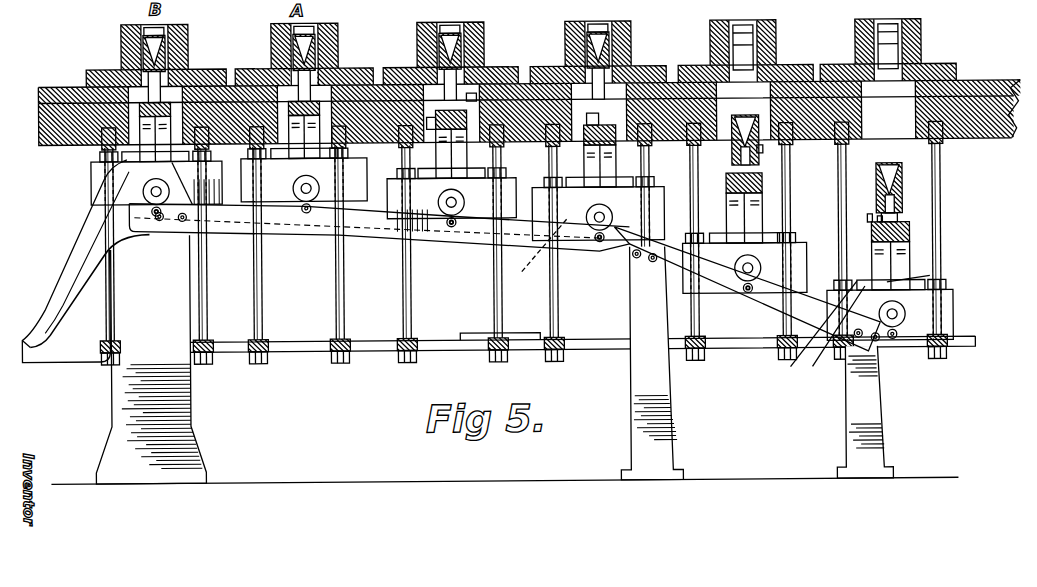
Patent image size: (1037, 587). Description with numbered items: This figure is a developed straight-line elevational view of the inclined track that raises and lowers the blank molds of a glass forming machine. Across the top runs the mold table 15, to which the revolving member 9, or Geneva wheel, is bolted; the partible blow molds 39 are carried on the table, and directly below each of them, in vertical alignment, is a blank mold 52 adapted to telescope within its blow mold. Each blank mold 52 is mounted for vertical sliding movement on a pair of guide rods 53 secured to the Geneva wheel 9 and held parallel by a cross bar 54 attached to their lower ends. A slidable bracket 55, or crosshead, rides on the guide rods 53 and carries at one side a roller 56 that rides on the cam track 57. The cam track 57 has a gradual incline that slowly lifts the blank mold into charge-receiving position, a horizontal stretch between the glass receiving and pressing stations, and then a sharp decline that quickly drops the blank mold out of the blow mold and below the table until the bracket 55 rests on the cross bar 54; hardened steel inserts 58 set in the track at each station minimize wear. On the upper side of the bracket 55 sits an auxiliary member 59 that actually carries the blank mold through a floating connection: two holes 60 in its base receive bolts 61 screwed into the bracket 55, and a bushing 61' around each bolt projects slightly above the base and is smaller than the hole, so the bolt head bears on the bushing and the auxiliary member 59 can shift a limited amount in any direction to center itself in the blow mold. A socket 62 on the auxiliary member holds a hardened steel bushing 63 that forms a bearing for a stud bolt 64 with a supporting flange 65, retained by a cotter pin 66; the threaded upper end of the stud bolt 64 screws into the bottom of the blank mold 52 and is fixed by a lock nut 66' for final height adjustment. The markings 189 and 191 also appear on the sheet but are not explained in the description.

The revolving member 9 is at (72, 133).
The mold table 15 is at (58, 87).
The blow mold 39 is at (123, 33).
The blank mold 52 is at (192, 53).
The guide rods 53 is at (492, 282).
The cross bar 54 is at (437, 348).
The slidable bracket 55 is at (102, 174).
The roller 56 is at (144, 192).
The cam track 57 is at (618, 254).
The hardened steel inserts 58 is at (158, 214).
The auxiliary member 59 is at (573, 162).
The holes 60 is at (835, 347).
The bolts 61 is at (689, 320).
The bushing 61' is at (949, 270).
The socket 62 is at (624, 148).
The hardened steel bushing 63 is at (588, 125).
The stud bolt 64 is at (903, 223).
The supporting flange 65 is at (880, 226).
The cotter pin 66 is at (403, 142).
The lock nut 66' is at (671, 133).
The section line 189 is at (264, 6).
The section line 191 is at (216, 11).